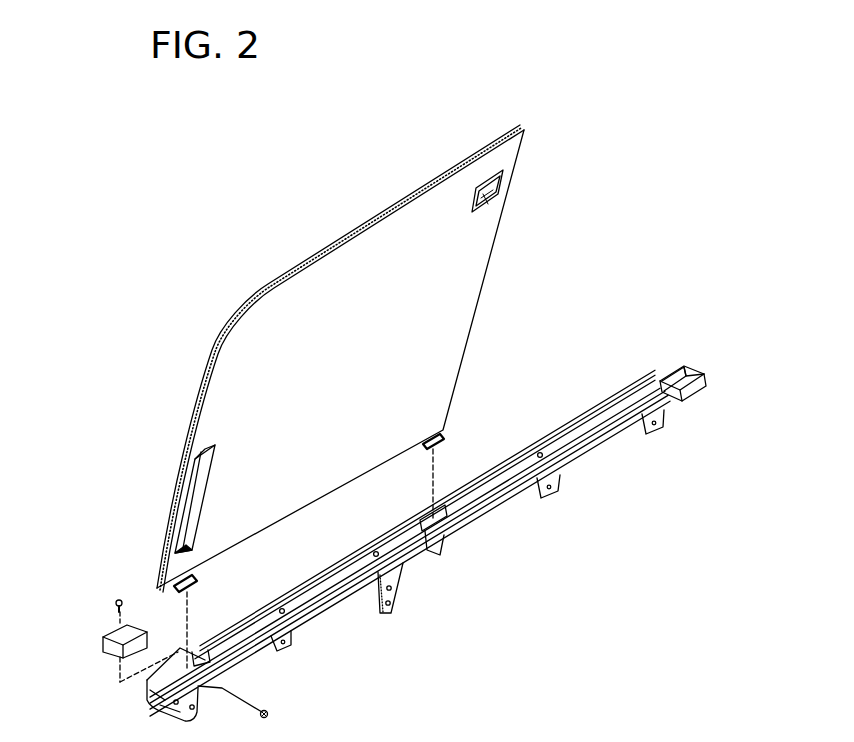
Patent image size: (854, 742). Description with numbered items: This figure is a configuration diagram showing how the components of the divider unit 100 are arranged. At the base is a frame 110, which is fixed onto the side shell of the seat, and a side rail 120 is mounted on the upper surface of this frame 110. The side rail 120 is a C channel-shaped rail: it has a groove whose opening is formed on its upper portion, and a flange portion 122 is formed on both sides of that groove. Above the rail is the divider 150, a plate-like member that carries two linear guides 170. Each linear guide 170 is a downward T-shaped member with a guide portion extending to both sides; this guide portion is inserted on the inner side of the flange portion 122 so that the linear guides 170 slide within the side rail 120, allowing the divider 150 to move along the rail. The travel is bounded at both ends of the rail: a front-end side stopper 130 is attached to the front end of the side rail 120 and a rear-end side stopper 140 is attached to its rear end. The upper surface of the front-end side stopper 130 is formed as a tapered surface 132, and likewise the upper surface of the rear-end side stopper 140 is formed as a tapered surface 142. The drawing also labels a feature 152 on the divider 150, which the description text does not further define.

The divider unit 100 is at (630, 114).
The frame 110 is at (326, 605).
The side rail 120 is at (342, 580).
The flange portion 122 is at (271, 605).
The front-end side stopper 130 is at (106, 650).
The tapered surface 132 is at (121, 597).
The rear-end side stopper 140 is at (690, 368).
The tapered surface 142 is at (677, 378).
The divider 150 is at (447, 267).
The glass strip 152 is at (193, 477).
The linear guide 170 is at (196, 581).